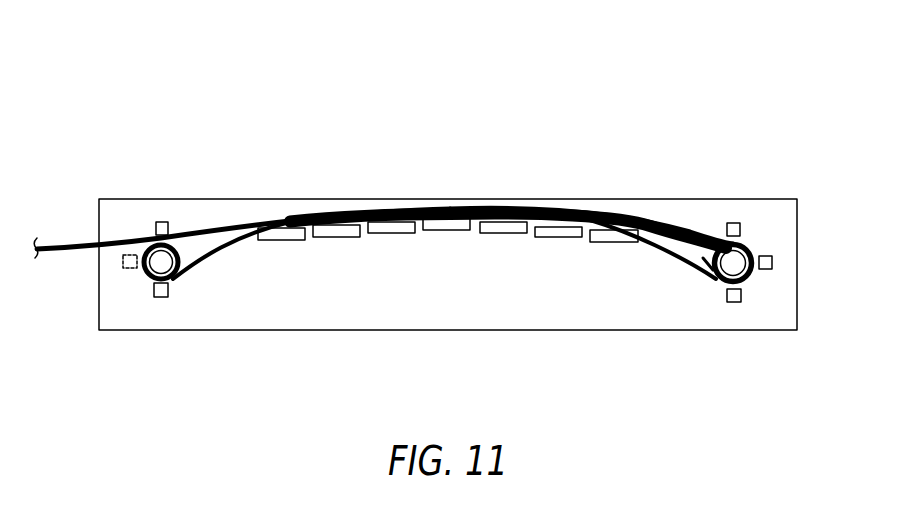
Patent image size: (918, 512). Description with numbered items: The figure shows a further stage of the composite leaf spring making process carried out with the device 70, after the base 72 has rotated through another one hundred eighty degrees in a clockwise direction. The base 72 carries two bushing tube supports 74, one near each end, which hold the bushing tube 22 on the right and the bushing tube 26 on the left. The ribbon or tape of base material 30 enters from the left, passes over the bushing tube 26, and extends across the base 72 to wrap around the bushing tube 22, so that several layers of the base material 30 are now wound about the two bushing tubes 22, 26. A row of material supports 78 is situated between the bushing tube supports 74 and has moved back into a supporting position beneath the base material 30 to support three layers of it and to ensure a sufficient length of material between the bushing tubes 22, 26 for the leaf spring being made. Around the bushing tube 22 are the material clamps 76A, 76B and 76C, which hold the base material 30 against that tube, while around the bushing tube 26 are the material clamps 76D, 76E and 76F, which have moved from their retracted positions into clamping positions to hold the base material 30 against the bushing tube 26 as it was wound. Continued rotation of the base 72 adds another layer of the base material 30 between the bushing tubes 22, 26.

The device 70 is at (194, 57).
The base 72 is at (763, 199).
The base material 30 is at (67, 246).
The bushing tube 26 is at (180, 248).
The bushing tube 22 is at (717, 245).
The bushing tube supports 74 is at (160, 265).
The material supports 78 is at (392, 233).
The material clamp 76A is at (735, 302).
The material clamp 76B is at (773, 263).
The material clamp 76C is at (733, 223).
The material clamp 76D is at (162, 222).
The material clamp 76E is at (123, 262).
The material clamp 76F is at (163, 297).